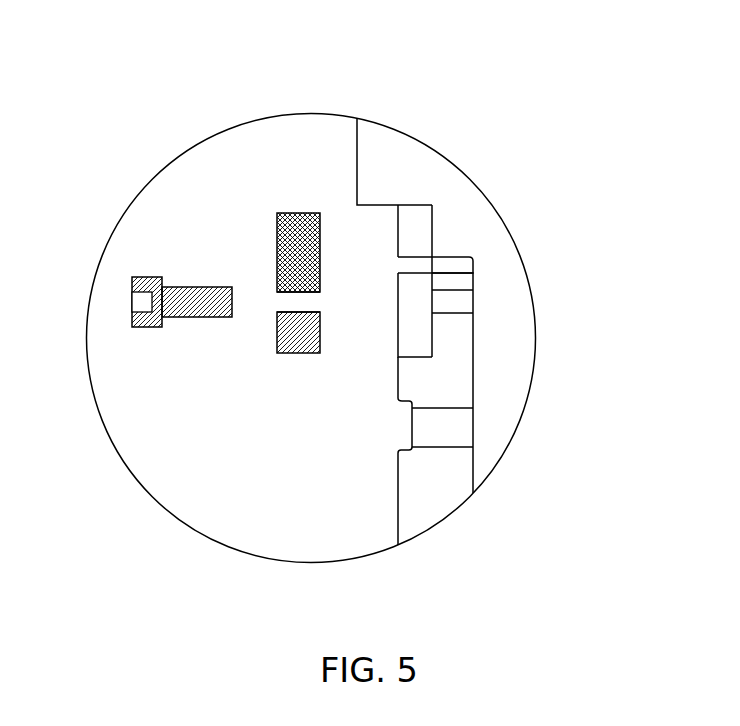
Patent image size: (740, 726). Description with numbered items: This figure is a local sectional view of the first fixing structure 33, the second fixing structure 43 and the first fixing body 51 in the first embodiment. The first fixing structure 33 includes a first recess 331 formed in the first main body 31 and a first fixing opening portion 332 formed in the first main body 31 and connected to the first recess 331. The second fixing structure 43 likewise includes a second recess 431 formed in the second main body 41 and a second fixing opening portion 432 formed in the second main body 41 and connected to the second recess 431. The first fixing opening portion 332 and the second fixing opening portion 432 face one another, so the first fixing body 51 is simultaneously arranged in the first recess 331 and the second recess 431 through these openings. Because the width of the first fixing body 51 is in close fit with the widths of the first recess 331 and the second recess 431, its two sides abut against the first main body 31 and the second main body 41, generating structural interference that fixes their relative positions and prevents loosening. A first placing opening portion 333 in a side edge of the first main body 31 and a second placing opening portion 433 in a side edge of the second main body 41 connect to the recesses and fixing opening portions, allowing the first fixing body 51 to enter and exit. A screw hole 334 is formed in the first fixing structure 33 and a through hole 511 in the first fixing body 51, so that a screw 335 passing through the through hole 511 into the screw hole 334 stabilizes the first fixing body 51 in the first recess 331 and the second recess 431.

The first main body 31 is at (427, 505).
The first fixing structure 33 is at (516, 395).
The first recess 331 is at (413, 340).
The first fixing opening portion 332 is at (475, 272).
The first placing opening portion 333 is at (392, 338).
The screw hole 334 is at (458, 300).
The screw 335 is at (193, 283).
The second main body 41 is at (390, 152).
The second fixing structure 43 is at (530, 247).
The second recess 431 is at (413, 237).
The second fixing opening portion 432 is at (440, 262).
The second placing opening portion 433 is at (395, 240).
The first fixing body 51 is at (185, 244).
The through hole 511 is at (278, 303).